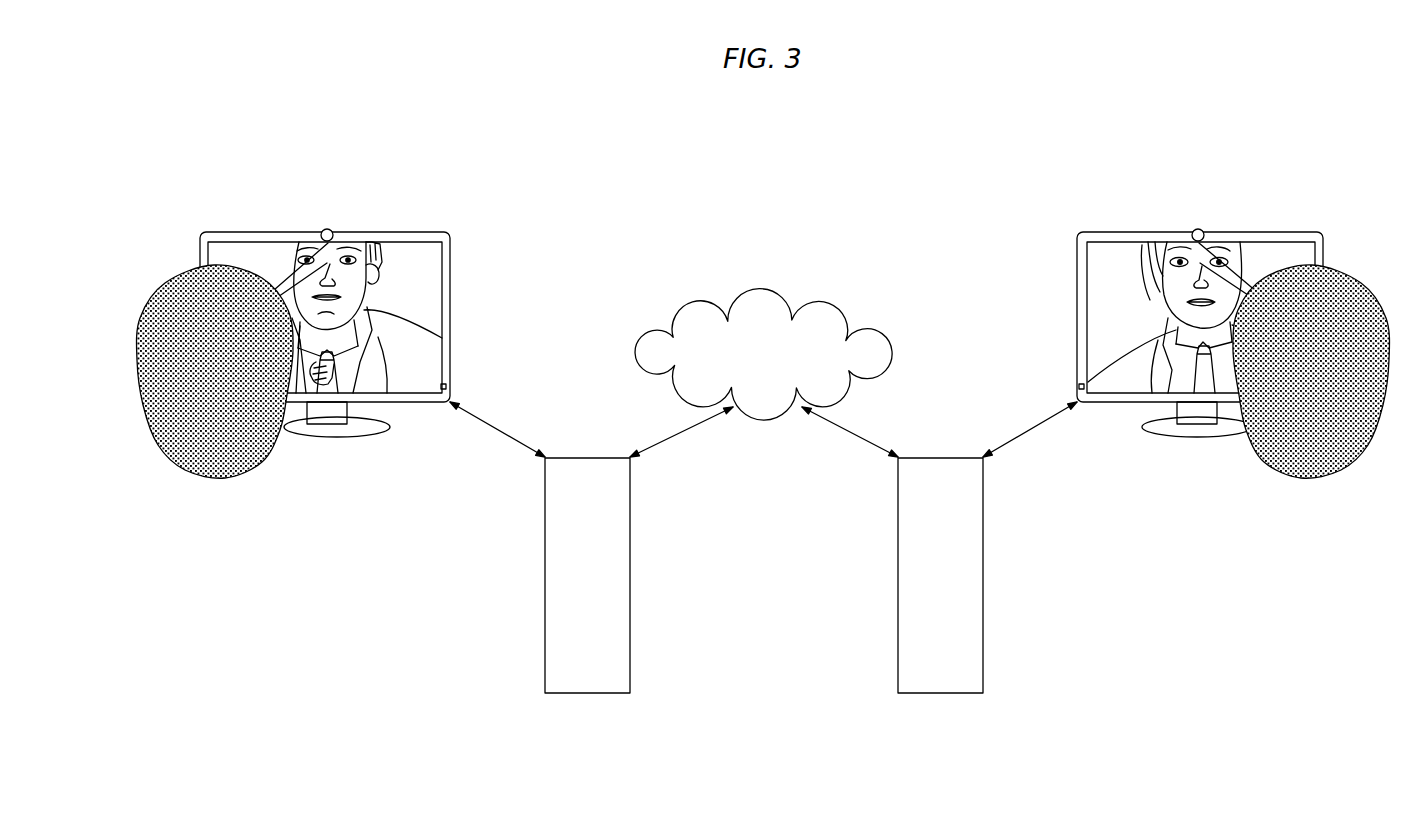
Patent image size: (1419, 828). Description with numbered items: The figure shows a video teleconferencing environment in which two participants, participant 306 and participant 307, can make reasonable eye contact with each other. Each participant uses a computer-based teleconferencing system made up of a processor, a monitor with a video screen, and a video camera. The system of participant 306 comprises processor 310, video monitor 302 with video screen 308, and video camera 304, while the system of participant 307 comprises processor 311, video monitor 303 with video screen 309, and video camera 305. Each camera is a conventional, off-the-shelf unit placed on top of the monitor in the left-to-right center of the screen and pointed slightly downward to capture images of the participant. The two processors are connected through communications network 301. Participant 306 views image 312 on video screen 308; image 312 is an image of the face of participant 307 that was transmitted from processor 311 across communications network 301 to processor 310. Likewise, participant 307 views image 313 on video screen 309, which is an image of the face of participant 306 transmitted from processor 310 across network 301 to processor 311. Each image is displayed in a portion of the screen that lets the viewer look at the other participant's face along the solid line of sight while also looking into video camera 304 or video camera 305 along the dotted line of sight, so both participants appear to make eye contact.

The communications network 301 is at (827, 306).
The video monitor 302 is at (451, 240).
The video monitor 303 is at (1326, 242).
The video camera 304 is at (333, 228).
The video camera 305 is at (1206, 230).
The participant 306 is at (166, 464).
The participant 307 is at (1360, 458).
The video screen 308 is at (399, 317).
The video screen 309 is at (1145, 317).
The processor 310 is at (545, 688).
The processor 311 is at (898, 688).
The image 312 is at (376, 306).
The image 313 is at (1146, 328).